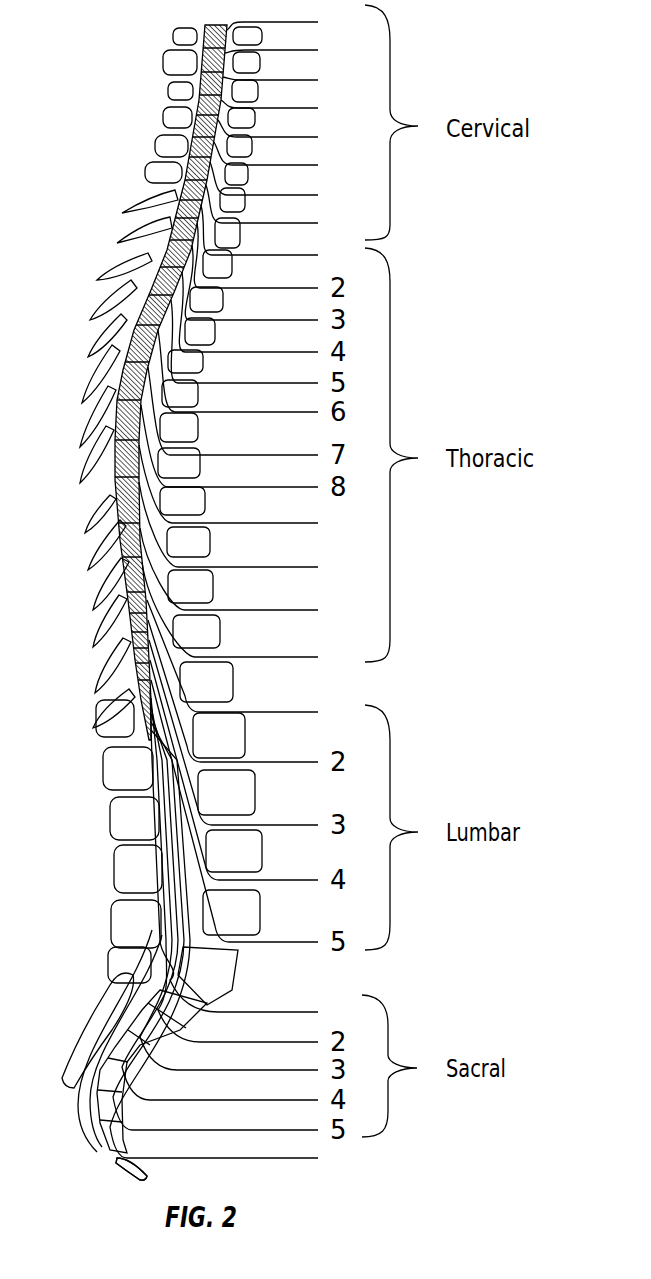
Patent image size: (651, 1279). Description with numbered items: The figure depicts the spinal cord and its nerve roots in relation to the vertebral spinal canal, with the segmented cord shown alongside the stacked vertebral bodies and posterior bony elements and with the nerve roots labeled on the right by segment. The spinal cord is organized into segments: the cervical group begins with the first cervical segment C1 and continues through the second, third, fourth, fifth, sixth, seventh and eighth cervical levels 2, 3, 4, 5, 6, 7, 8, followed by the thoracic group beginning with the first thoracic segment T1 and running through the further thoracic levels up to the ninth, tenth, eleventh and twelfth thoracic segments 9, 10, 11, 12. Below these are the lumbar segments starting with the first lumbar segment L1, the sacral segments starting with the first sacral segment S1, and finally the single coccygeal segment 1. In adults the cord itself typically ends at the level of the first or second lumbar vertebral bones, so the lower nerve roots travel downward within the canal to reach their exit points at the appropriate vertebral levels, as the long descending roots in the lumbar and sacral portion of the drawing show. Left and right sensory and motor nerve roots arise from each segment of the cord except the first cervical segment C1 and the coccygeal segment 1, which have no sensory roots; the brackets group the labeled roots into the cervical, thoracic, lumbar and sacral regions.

The first cervical spinal segment C1 is at (293, 26).
The second spinal segment level 2 is at (286, 54).
The third spinal segment level 3 is at (285, 83).
The fourth spinal segment level 4 is at (284, 110).
The fifth spinal segment level 5 is at (282, 138).
The sixth spinal segment level 6 is at (280, 163).
The seventh spinal segment level 7 is at (278, 187).
The eighth spinal segment level 8 is at (276, 216).
The first thoracic spinal segment T1 is at (280, 241).
The ninth thoracic spinal segment 9 is at (243, 501).
The tenth thoracic spinal segment 10 is at (247, 542).
The eleventh thoracic spinal segment 11 is at (248, 588).
The twelfth thoracic spinal segment 12 is at (249, 632).
The first lumbar spinal segment L1 is at (253, 679).
The first sacral spinal segment S1 is at (255, 858).
The coccygeal spinal segment 1 is at (278, 955).